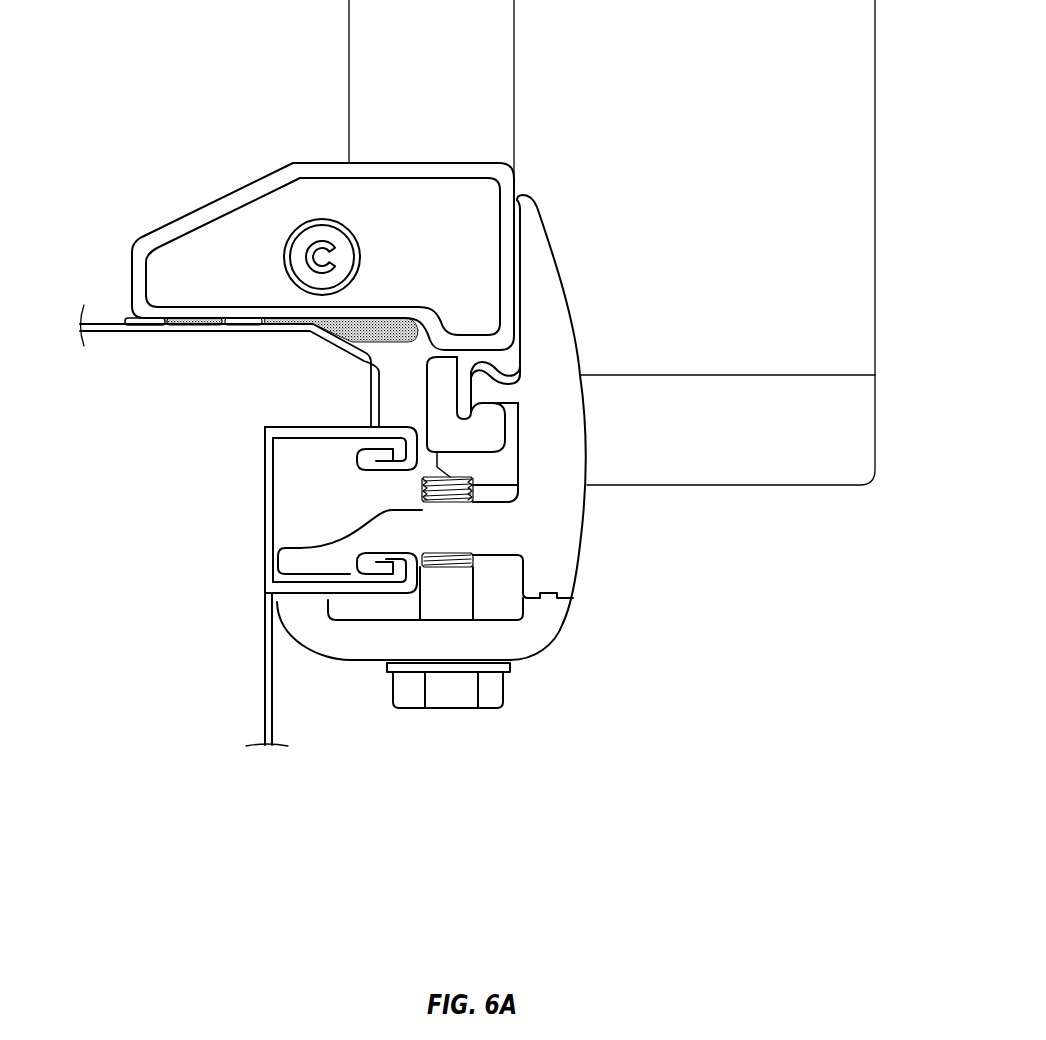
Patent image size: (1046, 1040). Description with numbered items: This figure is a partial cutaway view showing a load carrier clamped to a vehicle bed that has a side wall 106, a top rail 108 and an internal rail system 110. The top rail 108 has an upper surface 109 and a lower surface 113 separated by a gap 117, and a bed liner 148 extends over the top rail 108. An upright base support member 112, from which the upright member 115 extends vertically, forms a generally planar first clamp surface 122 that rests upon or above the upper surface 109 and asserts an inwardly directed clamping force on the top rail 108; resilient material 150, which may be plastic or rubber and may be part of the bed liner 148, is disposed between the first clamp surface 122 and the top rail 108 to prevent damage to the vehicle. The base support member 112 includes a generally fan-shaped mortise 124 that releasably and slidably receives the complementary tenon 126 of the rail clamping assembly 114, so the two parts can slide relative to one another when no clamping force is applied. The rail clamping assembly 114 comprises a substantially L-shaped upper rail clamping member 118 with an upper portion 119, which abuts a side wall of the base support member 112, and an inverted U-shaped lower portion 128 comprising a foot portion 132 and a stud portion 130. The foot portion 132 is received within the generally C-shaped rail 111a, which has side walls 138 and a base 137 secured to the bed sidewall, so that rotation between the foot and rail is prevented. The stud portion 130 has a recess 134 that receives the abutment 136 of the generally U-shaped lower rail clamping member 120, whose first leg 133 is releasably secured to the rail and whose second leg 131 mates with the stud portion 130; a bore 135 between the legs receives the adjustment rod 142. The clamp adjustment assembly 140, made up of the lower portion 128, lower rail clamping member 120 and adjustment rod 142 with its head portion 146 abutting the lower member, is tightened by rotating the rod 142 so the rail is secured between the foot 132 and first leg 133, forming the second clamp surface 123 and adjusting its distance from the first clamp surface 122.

The side wall 106 is at (207, 618).
The top rail 108 is at (193, 331).
The upper surface 109 is at (127, 320).
The internal rail system 110 is at (265, 503).
The C-shaped rail 111a is at (270, 470).
The upright base support member 112 is at (188, 223).
The lower surface 113 is at (332, 425).
The rail clamping assembly 114 is at (655, 549).
The upright member 115 is at (377, 52).
The gap 117 is at (355, 387).
The upper rail clamping member 118 is at (573, 443).
The upper portion 119 is at (560, 297).
The lower rail clamping member 120 is at (390, 642).
The first clamp surface 122 is at (195, 313).
The second clamp surface 123 is at (297, 600).
The mortise 124 is at (462, 360).
The tenon 126 is at (472, 395).
The lower portion 128 is at (453, 530).
The stud portion 130 is at (550, 570).
The second leg 131 is at (546, 627).
The foot portion 132 is at (296, 568).
The first leg 133 is at (307, 628).
The recess 134 is at (557, 593).
The bore 135 is at (460, 642).
The abutment 136 is at (548, 610).
The base 137 is at (264, 530).
The side walls 138 is at (312, 437).
The clamp adjustment assembly 140 is at (576, 682).
The adjustment rod 142 is at (493, 597).
The head portion 146 is at (490, 700).
The bed liner 148 is at (112, 322).
The resilient material 150 is at (353, 323).